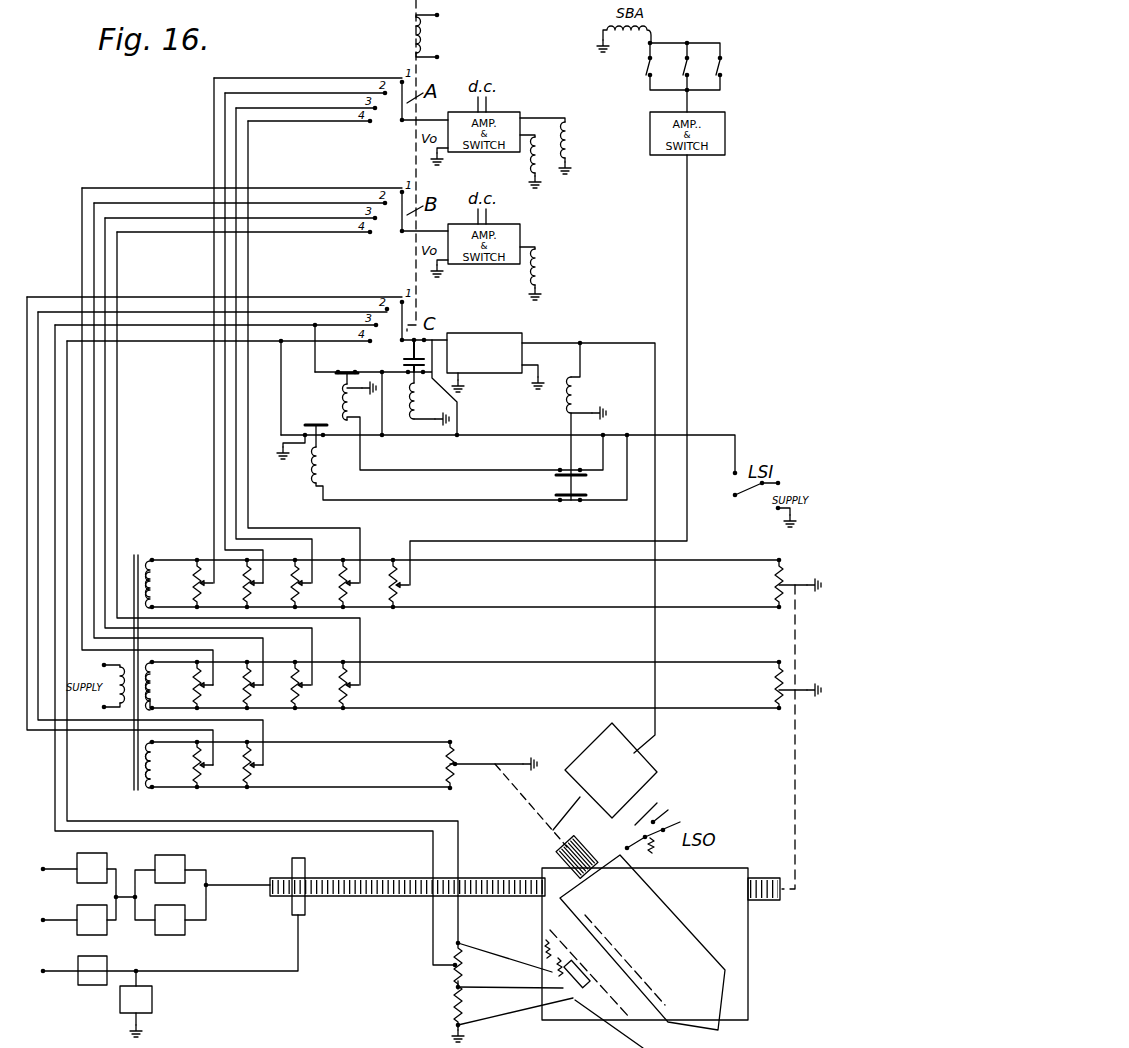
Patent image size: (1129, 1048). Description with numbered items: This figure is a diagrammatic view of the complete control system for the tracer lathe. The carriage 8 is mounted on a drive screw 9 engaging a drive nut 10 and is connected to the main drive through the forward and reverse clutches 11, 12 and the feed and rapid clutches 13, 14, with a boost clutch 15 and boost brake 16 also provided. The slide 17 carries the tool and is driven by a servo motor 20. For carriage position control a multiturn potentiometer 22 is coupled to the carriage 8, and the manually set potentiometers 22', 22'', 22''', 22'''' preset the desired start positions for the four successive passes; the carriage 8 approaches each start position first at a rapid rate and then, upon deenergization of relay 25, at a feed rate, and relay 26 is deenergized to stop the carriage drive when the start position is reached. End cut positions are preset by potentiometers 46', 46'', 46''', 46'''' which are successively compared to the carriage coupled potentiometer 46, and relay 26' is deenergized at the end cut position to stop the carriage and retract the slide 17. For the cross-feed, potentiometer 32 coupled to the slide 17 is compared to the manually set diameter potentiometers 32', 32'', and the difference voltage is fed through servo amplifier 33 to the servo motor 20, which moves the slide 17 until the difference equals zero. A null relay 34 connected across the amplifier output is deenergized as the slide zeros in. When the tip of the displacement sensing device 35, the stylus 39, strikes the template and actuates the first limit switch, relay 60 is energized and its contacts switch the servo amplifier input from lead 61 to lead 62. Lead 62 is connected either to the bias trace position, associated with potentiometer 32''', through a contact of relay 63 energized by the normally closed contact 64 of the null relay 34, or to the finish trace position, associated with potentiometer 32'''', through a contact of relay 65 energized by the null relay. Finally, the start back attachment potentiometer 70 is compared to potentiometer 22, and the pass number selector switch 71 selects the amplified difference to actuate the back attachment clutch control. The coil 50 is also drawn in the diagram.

The carriage 8 is at (750, 951).
The drive screw 9 is at (347, 897).
The drive nut 10 is at (305, 866).
The forward clutch 11 is at (186, 861).
The reverse clutch 12 is at (186, 930).
The feed clutch 13 is at (78, 857).
The rapid clutch 14 is at (78, 911).
The boost clutch 15 is at (78, 961).
The boost brake 16 is at (120, 1001).
The slide 17 is at (712, 992).
The servo motor 20 is at (648, 775).
The multiturn electrical potentiometer 22 is at (778, 584).
The potentiometer 22' is at (186, 343).
The potentiometer 22'' is at (236, 351).
The potentiometer 22''' is at (274, 358).
The potentiometer 22'''' is at (304, 365).
The relay 25 is at (571, 140).
The relay 26 is at (516, 161).
The relay 26' is at (516, 273).
The potentiometer 32 is at (488, 793).
The potentiometer 32' is at (120, 543).
The potentiometer 32'' is at (150, 550).
The potentiometer 32''' is at (484, 997).
The potentiometer 32'''' is at (505, 985).
The servo amplifier 33 is at (505, 326).
The null relay 34 is at (566, 400).
The displacement sensing device 35 is at (573, 1002).
The stylus 39 is at (638, 1041).
The carriage coupled potentiometer 46 is at (778, 685).
The potentiometer 46' is at (147, 449).
The potentiometer 46'' is at (178, 456).
The potentiometer 46''' is at (208, 464).
The potentiometer 46'''' is at (238, 471).
The relay coil 50 is at (412, 30).
The relay 60 is at (410, 400).
The lead 61 is at (428, 338).
The lead 62 is at (404, 372).
The relay 63 is at (340, 397).
The normally closed contact 64 is at (583, 488).
The relay 65 is at (322, 463).
The start back attachment potentiometer 70 is at (390, 598).
The back attachment pass number selector switch 71 is at (722, 46).